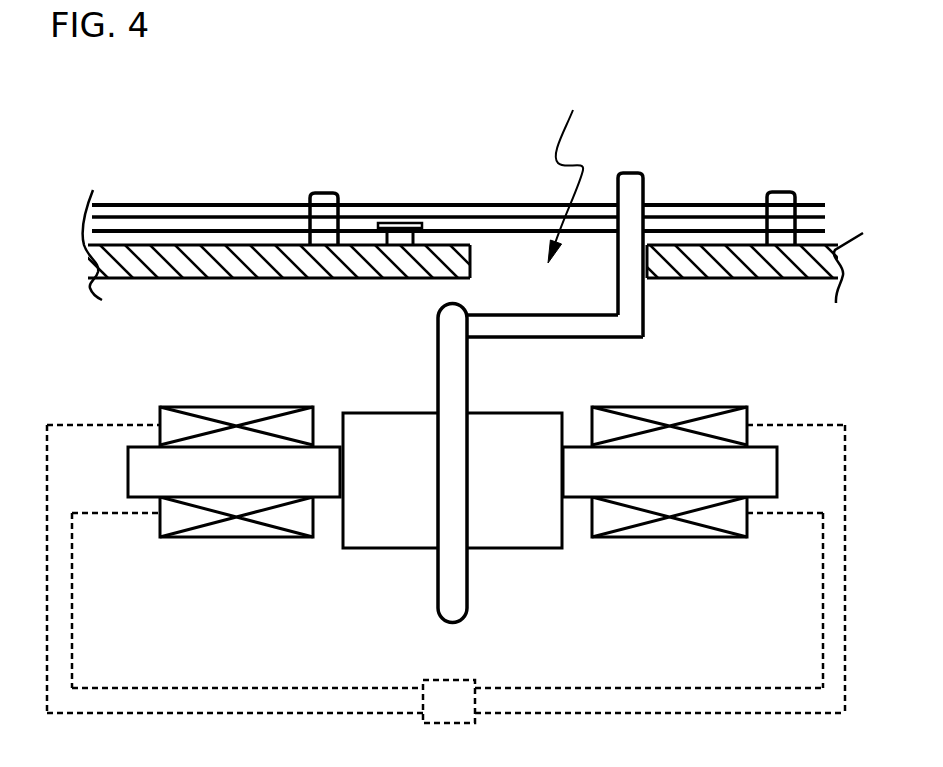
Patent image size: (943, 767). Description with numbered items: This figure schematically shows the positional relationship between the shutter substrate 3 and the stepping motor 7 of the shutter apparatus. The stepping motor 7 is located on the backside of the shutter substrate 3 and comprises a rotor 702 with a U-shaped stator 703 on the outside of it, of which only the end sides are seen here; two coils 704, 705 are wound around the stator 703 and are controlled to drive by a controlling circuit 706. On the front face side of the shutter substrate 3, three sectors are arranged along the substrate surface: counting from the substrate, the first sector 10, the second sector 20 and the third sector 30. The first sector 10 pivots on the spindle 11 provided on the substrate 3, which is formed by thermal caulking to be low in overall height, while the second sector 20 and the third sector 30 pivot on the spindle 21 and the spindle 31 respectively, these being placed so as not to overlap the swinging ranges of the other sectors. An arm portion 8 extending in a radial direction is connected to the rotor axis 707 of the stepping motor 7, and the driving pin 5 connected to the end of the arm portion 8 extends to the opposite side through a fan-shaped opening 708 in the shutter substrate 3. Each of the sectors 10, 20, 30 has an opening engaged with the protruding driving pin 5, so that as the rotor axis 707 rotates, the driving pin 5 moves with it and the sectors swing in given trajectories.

The shutter substrate 3 is at (200, 278).
The driving pin 5 is at (633, 187).
The stepping motor 7 is at (272, 574).
The arm portion 8 is at (582, 327).
The first sector 10 is at (825, 230).
The spindle 11 is at (402, 240).
The second sector 20 is at (530, 217).
The spindle 21 is at (318, 195).
The third sector 30 is at (280, 203).
The spindle 31 is at (783, 195).
The rotor 702 is at (398, 533).
The stator 703 is at (140, 472).
The coil 704 is at (693, 538).
The coil 705 is at (183, 533).
The controlling circuit 706 is at (449, 701).
The rotor axis 707 is at (445, 348).
The fan-shaped opening 708 is at (572, 172).